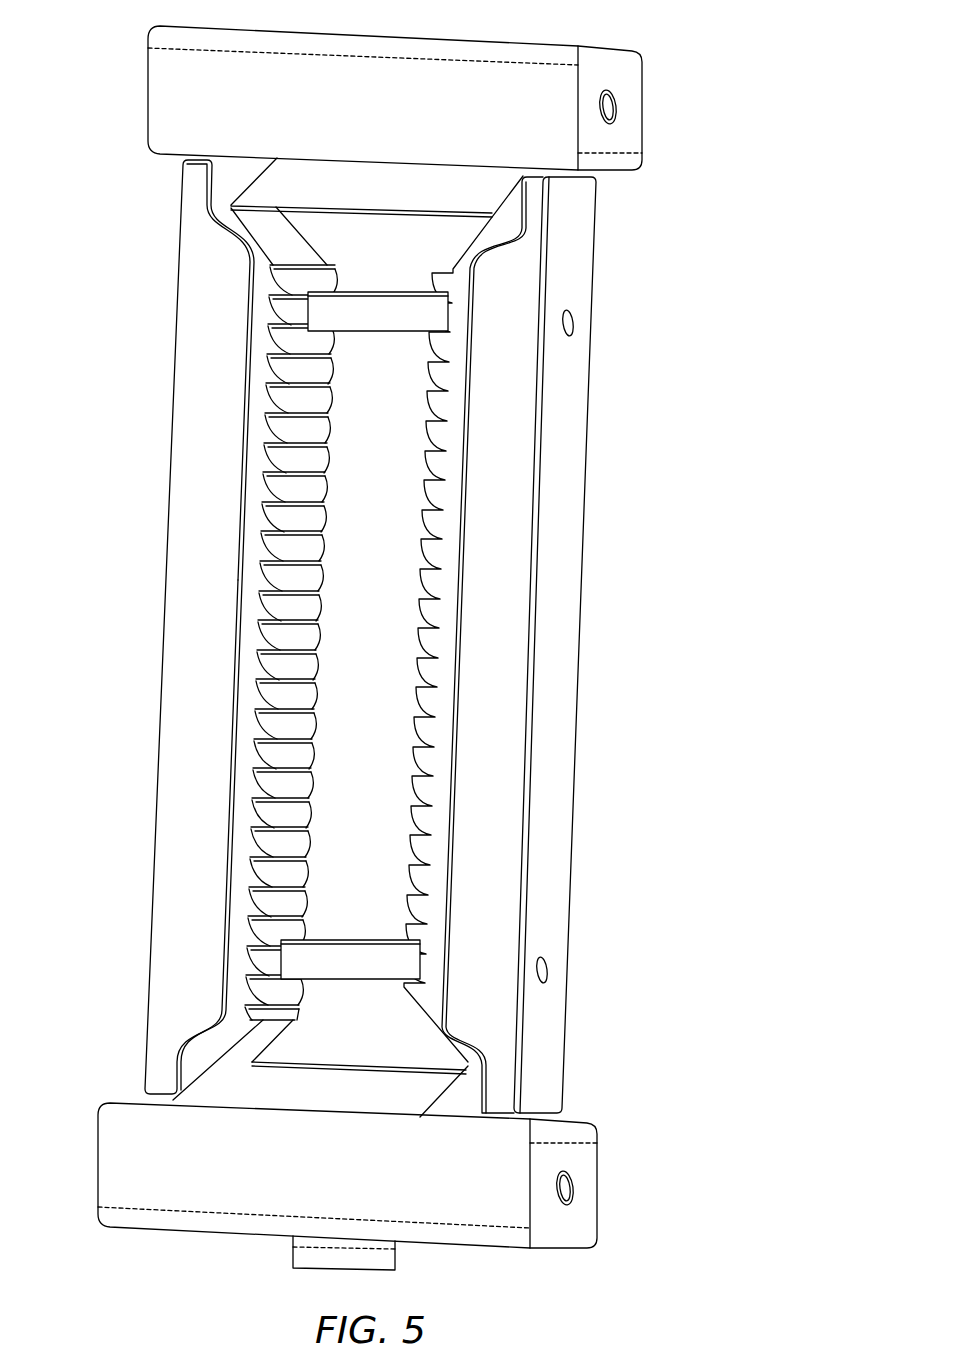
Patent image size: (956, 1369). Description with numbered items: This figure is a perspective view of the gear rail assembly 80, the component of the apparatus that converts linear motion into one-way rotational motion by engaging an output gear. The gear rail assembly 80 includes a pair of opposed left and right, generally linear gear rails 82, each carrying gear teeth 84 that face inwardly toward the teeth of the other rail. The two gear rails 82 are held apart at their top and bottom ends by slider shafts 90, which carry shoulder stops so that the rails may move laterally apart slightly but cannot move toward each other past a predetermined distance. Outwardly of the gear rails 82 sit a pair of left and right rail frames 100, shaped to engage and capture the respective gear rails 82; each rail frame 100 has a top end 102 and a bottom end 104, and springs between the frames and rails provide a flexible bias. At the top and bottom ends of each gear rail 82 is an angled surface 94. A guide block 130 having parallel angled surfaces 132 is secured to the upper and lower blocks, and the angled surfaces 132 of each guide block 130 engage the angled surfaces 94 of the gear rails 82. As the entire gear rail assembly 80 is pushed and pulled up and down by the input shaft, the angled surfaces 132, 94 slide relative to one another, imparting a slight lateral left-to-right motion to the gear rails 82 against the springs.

The gear rail assembly 80 is at (200, 80).
The gear rail 82 is at (453, 320).
The gear teeth 84 is at (318, 518).
The slider shaft 90 is at (374, 318).
The angled surface 94 is at (250, 185).
The rail frame 100 is at (178, 567).
The top end of rail frame 102 is at (192, 215).
The bottom end of rail frame 104 is at (157, 1042).
The guide block 130 is at (360, 173).
The angled surfaces of guide block 132 is at (248, 184).